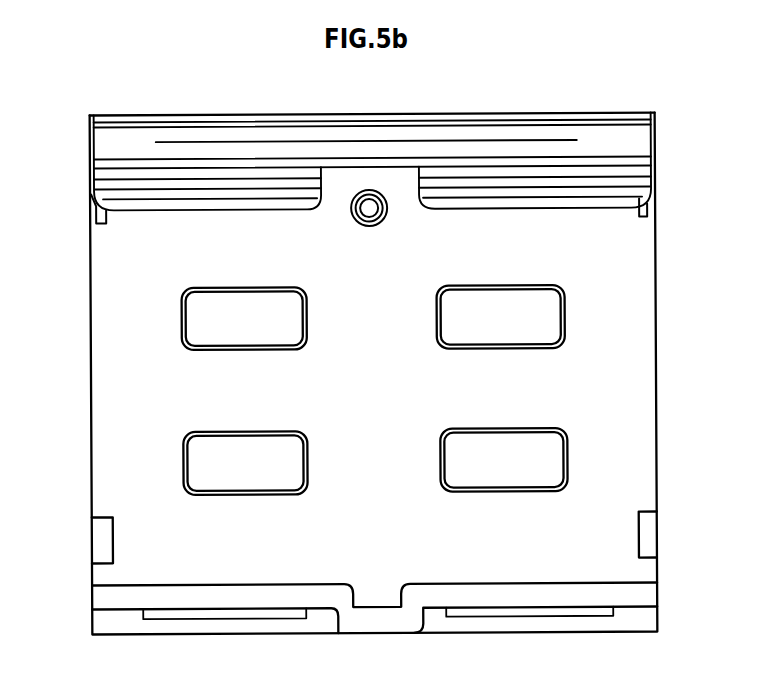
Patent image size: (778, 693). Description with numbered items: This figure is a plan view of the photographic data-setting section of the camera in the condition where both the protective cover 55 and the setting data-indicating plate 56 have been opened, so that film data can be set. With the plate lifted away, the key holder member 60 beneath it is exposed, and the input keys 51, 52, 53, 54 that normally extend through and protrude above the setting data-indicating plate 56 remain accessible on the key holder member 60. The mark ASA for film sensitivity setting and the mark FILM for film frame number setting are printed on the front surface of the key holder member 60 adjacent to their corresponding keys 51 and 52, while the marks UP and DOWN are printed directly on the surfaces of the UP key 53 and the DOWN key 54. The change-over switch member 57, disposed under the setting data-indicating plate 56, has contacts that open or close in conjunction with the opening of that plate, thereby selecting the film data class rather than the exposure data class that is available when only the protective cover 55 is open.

The input key 51 is at (247, 308).
The input key 52 is at (497, 300).
The UP key 53 is at (234, 481).
The DOWN key 54 is at (495, 482).
The protective cover 55 is at (107, 137).
The setting data-indicating plate 56 is at (96, 210).
The change-over switch member 57 is at (370, 210).
The key holder member 60 is at (105, 418).